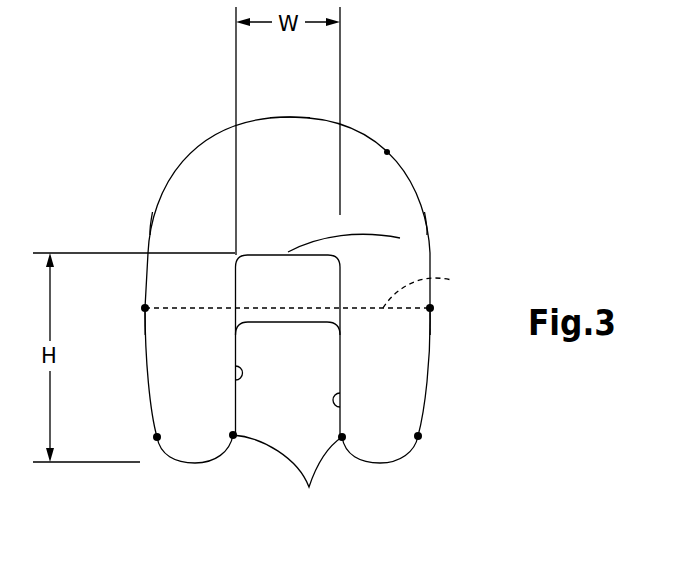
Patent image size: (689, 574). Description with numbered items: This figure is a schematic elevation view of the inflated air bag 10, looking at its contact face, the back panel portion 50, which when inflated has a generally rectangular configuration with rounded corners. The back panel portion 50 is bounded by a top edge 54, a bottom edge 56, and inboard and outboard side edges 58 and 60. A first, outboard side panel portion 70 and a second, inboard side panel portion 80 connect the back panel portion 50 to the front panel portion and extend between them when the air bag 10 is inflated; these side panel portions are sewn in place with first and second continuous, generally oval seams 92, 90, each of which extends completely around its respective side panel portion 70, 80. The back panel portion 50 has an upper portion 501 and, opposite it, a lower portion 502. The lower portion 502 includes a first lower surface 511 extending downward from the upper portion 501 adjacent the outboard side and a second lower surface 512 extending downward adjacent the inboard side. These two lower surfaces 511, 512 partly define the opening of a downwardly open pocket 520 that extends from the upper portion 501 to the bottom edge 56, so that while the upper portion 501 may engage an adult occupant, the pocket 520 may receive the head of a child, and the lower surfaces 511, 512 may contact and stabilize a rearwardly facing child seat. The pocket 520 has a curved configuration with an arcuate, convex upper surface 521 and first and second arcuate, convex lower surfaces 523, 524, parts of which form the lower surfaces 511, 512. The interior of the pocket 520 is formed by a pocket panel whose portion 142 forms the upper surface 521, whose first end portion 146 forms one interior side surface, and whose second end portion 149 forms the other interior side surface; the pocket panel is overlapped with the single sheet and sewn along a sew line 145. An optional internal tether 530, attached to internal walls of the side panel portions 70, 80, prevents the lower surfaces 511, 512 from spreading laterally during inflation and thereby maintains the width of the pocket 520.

The air bag 10 is at (414, 80).
The back panel portion 50 is at (373, 190).
The top edge 54 is at (297, 117).
The bottom edge 56 is at (190, 459).
The inboard side edge 58 is at (145, 322).
The outboard side edge 60 is at (430, 323).
The first, outboard side panel portion 70 is at (436, 214).
The second, inboard side panel portion 80 is at (140, 213).
The second seam 90 is at (190, 138).
The first seam 92 is at (387, 152).
The portion of the pocket panel 142 is at (280, 275).
The sew line 145 is at (287, 476).
The first end portion 146 is at (345, 393).
The second end portion 149 is at (230, 385).
The upper portion 501 is at (220, 187).
The lower portion 502 is at (178, 418).
The first lower surface 511 is at (183, 373).
The second lower surface 512 is at (373, 370).
The downwardly open pocket 520 is at (400, 238).
The arcuate, convex upper surface 521 is at (272, 295).
The first arcuate, convex lower surface 523 is at (174, 443).
The second arcuate, convex lower surface 524 is at (403, 452).
The internal tether 530 is at (390, 213).